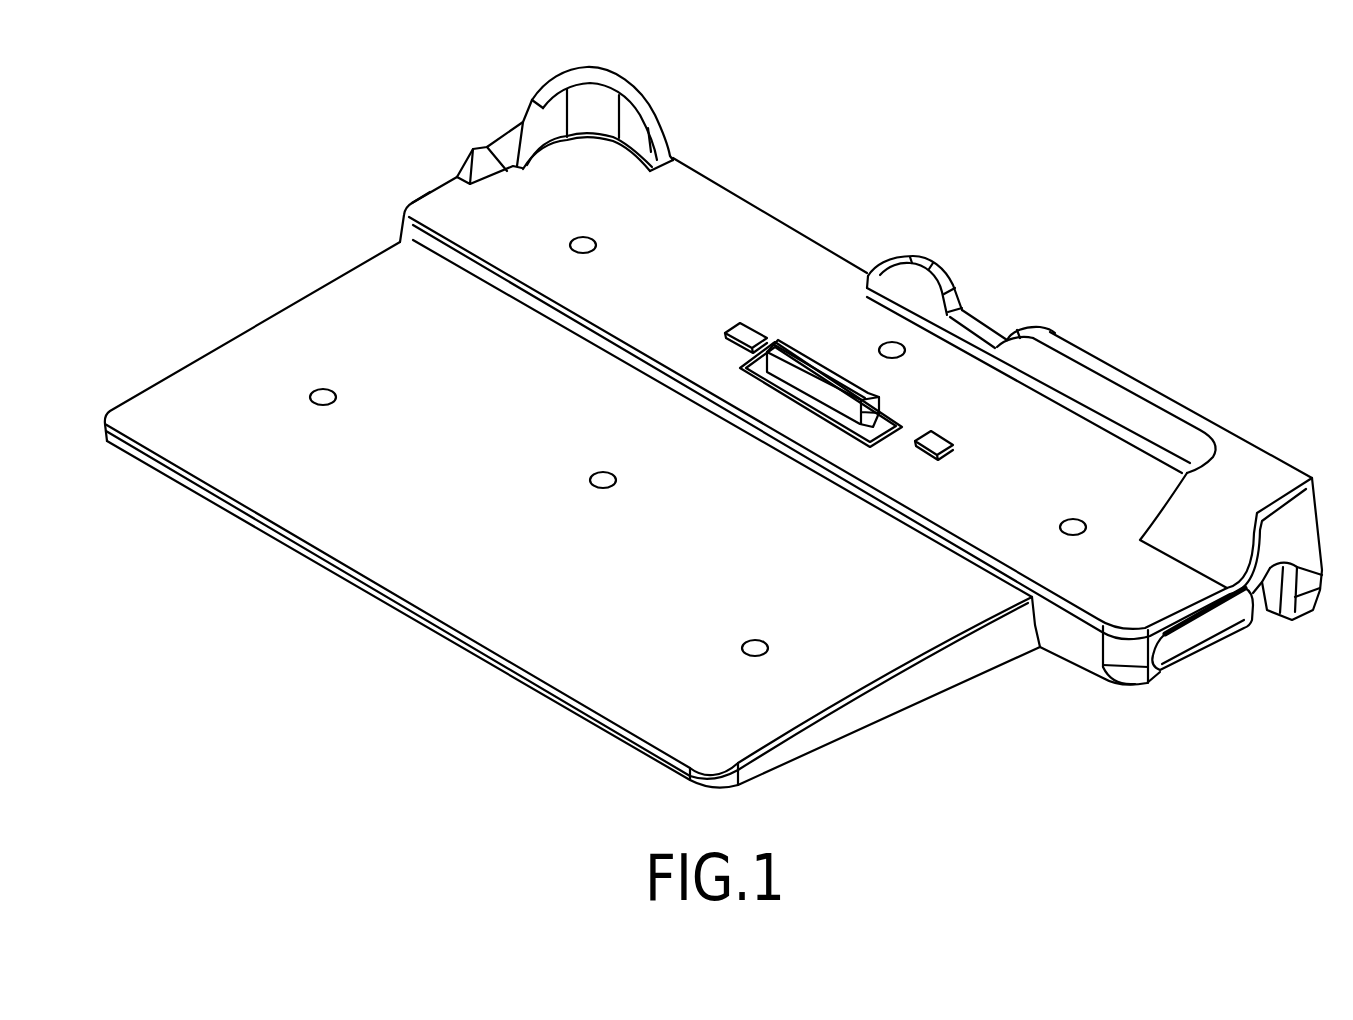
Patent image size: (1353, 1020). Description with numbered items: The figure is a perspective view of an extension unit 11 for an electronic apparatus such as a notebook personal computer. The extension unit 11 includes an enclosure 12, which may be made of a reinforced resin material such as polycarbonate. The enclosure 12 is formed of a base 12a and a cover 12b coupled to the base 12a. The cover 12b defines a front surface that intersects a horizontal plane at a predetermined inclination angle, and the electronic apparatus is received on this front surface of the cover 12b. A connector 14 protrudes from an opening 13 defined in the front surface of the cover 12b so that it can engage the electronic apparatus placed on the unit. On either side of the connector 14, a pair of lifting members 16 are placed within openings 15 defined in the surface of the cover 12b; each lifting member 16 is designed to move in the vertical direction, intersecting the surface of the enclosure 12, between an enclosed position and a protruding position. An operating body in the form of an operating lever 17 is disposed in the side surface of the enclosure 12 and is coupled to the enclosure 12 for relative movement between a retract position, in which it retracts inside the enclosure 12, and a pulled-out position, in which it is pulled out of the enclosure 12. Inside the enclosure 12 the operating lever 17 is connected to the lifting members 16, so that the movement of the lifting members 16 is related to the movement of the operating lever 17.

The extension unit 11 is at (373, 155).
The enclosure 12 is at (300, 297).
The base 12a is at (1130, 683).
The cover 12b is at (1068, 632).
The opening 13 is at (892, 398).
The connector 14 is at (838, 362).
The openings 15 is at (727, 333).
The lifting members 16 is at (768, 313).
The operating lever 17 is at (1235, 628).